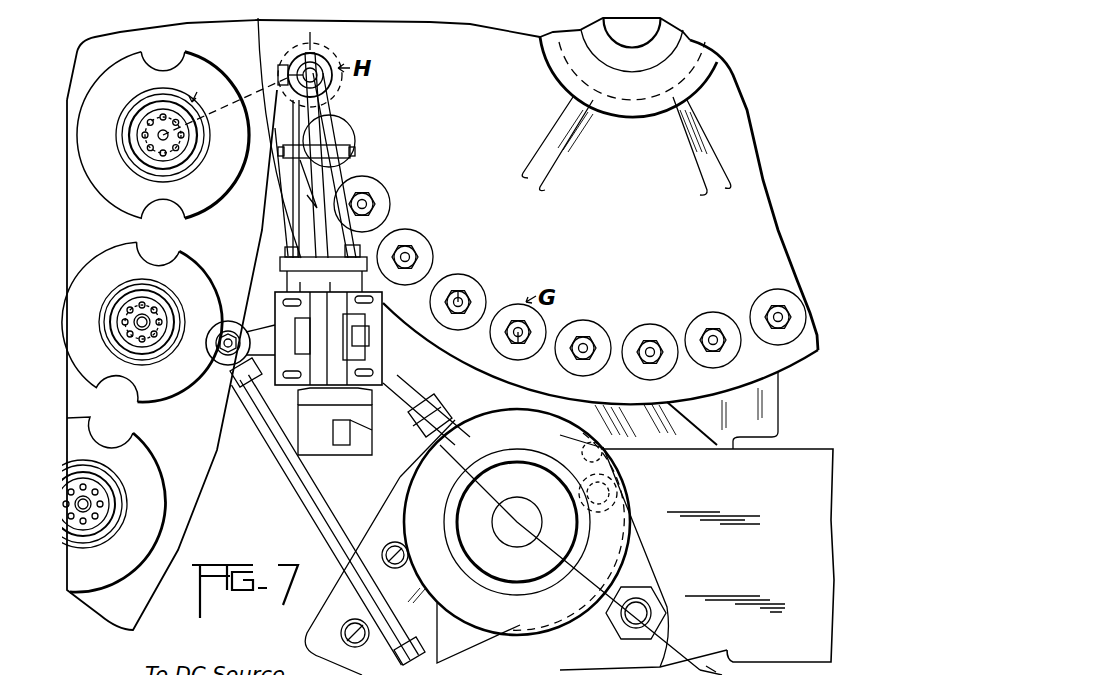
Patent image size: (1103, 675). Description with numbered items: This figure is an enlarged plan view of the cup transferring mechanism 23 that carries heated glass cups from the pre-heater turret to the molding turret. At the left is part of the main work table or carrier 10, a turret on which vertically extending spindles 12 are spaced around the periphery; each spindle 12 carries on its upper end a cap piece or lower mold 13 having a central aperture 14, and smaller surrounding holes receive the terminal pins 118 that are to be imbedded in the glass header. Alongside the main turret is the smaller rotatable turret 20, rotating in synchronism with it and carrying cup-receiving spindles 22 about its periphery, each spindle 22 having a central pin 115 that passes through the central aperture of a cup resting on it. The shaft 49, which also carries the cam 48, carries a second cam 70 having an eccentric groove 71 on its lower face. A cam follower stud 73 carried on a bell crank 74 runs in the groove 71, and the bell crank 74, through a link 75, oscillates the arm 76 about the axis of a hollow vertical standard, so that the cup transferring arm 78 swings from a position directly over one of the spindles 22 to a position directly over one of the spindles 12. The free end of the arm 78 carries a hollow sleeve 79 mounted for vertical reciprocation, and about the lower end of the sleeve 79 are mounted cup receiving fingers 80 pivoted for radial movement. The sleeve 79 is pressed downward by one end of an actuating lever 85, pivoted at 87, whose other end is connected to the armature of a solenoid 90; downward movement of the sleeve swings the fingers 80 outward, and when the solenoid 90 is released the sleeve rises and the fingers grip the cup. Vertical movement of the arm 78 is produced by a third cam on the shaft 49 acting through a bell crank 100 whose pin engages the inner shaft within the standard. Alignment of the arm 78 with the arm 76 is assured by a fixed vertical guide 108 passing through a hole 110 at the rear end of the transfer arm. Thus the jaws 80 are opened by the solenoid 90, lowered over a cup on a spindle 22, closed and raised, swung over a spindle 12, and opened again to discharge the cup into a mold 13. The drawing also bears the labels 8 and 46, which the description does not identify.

The connecting line 8 is at (310, 32).
The work table or carrier 10 is at (200, 497).
The spindle 12 is at (158, 355).
The lower mold 13 is at (170, 157).
The central aperture 14 is at (140, 325).
The smaller rotatable turret 20 is at (780, 232).
The cup-receiving spindle 22 is at (410, 258).
The transferring mechanism 23 is at (276, 285).
The boss 46 is at (647, 32).
The cam 48 is at (446, 535).
The shaft 49 is at (512, 535).
The second cam 70 is at (488, 620).
The eccentric groove 71 is at (605, 463).
The cam follower stud 73 is at (612, 505).
The bell crank 74 is at (650, 570).
The link 75 is at (323, 528).
The arm 76 is at (238, 322).
The cup transferring arm 78 is at (290, 195).
The hollow sleeve 79 is at (342, 62).
The cup receiving fingers 80 is at (305, 56).
The actuating lever 85 is at (315, 112).
The pivot 87 is at (352, 150).
The solenoid 90 is at (372, 312).
The bell crank 100 is at (403, 403).
The fixed vertical guide 108 is at (345, 448).
The hole 110 is at (360, 455).
The central pin 115 is at (458, 302).
The terminal pins 118 is at (157, 147).